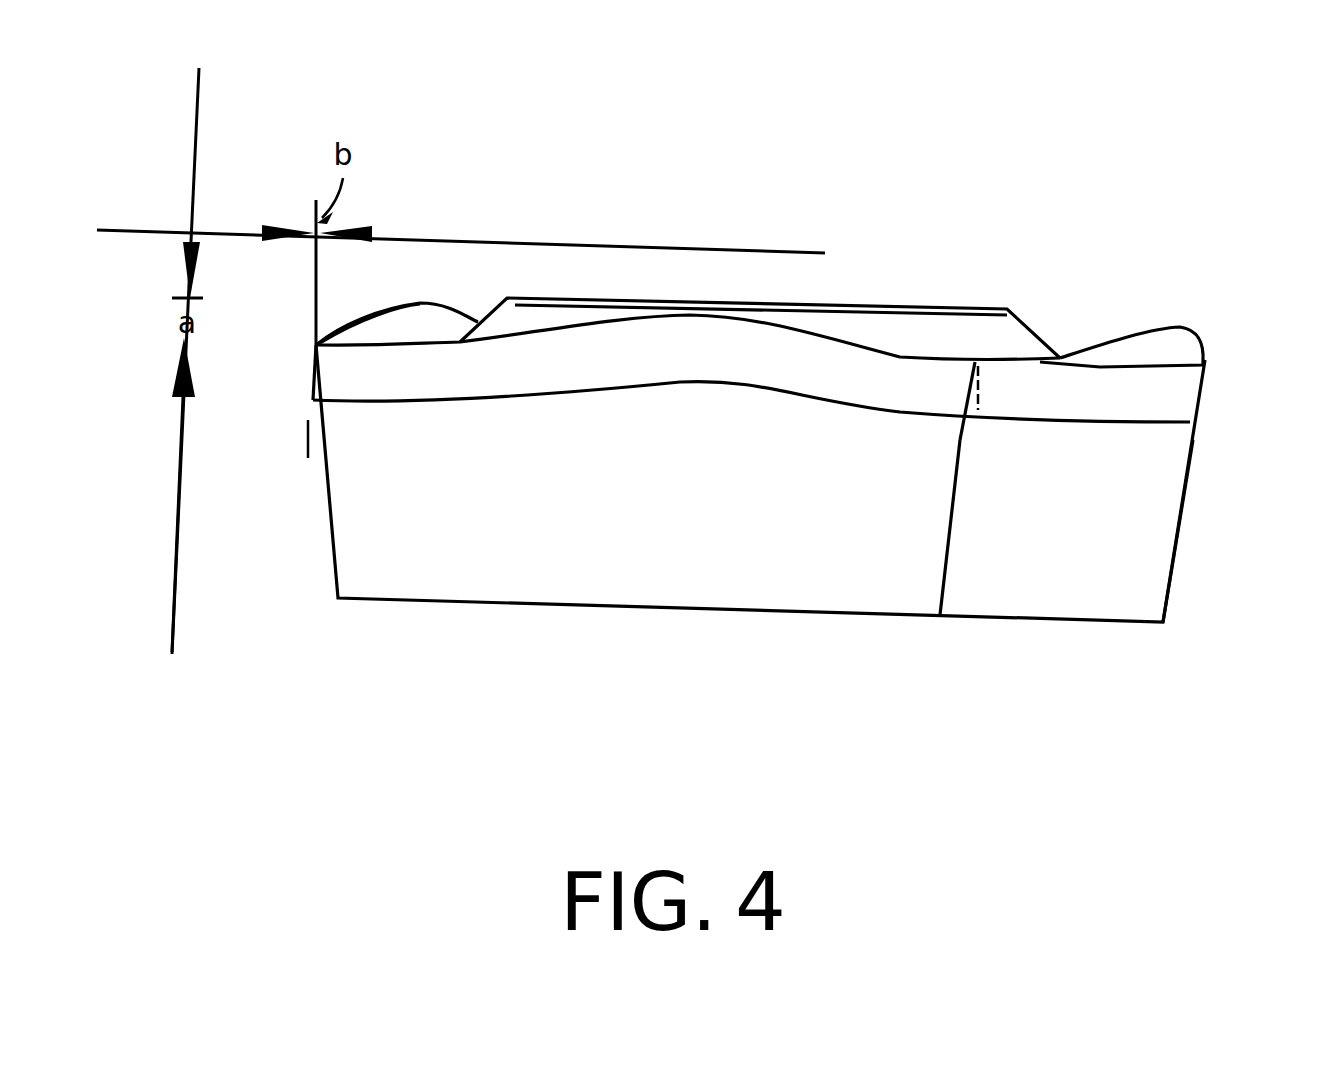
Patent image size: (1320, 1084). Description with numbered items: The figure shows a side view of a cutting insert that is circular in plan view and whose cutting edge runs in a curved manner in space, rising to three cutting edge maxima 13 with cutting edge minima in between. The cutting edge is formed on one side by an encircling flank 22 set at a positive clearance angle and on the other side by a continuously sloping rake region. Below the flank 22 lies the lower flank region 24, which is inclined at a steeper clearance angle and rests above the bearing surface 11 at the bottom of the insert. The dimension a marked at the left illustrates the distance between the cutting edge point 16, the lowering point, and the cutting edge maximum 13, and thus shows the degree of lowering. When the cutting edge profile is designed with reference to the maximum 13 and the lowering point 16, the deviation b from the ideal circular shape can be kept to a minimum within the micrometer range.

The bearing surface 11 is at (540, 607).
The cutting edge maximum 13 is at (443, 278).
The cutting edge point 16 is at (288, 380).
The flank region 22 is at (1183, 395).
The lower flank region 24 is at (1153, 521).